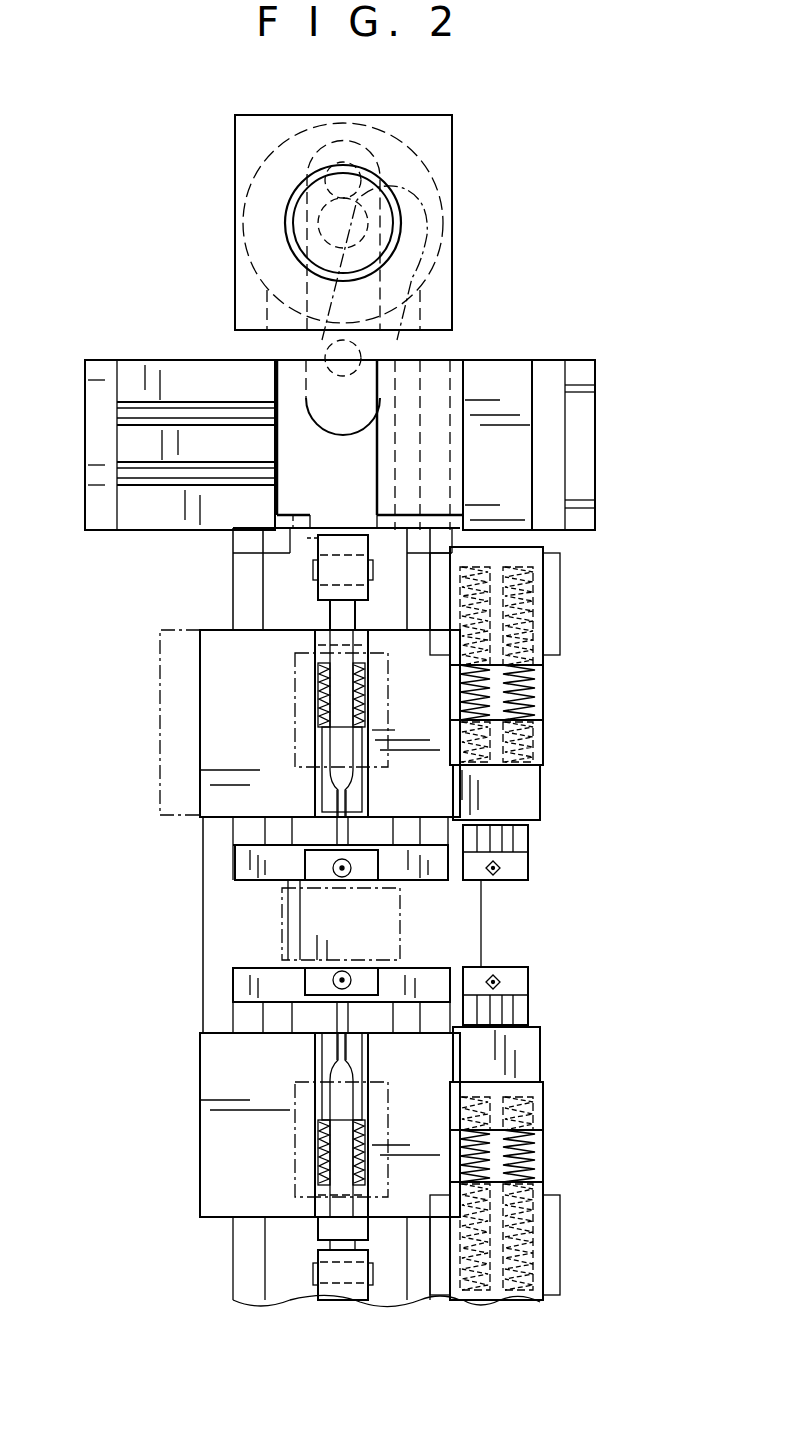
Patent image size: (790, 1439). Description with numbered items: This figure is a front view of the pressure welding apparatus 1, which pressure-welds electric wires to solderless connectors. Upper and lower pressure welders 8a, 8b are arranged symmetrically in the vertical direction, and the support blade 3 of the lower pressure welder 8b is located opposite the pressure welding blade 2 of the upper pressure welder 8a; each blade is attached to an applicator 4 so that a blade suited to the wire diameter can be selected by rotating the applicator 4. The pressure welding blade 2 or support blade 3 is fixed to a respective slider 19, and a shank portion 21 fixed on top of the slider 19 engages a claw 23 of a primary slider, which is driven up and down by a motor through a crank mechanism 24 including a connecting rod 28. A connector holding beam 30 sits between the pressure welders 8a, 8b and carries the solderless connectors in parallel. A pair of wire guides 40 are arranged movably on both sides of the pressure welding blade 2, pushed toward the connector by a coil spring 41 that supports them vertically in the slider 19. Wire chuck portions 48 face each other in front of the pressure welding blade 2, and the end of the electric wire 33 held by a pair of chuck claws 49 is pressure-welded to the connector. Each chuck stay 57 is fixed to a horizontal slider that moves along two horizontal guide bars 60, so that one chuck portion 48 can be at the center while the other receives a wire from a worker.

The pressure welding apparatus 1 is at (133, 250).
The pressure welding blade 2 is at (340, 795).
The support blade 3 is at (340, 1058).
The applicator 4 is at (320, 680).
The upper pressure welder 8a is at (150, 752).
The lower pressure welder 8b is at (180, 1137).
The slider 19 is at (325, 643).
The shank portion 21 is at (318, 572).
The claw 23 is at (330, 610).
The crank mechanism 24 is at (432, 284).
The connecting rod 28 is at (418, 262).
The connector holding beam 30 is at (282, 930).
The electric wire 33 is at (350, 870).
The wire guide 40 is at (325, 782).
The coil spring 41 is at (325, 716).
The wire chuck portion 48 is at (546, 788).
The chuck claw 49 is at (512, 882).
The chuck stay 57 is at (513, 437).
The horizontal guide bar 60 is at (196, 470).